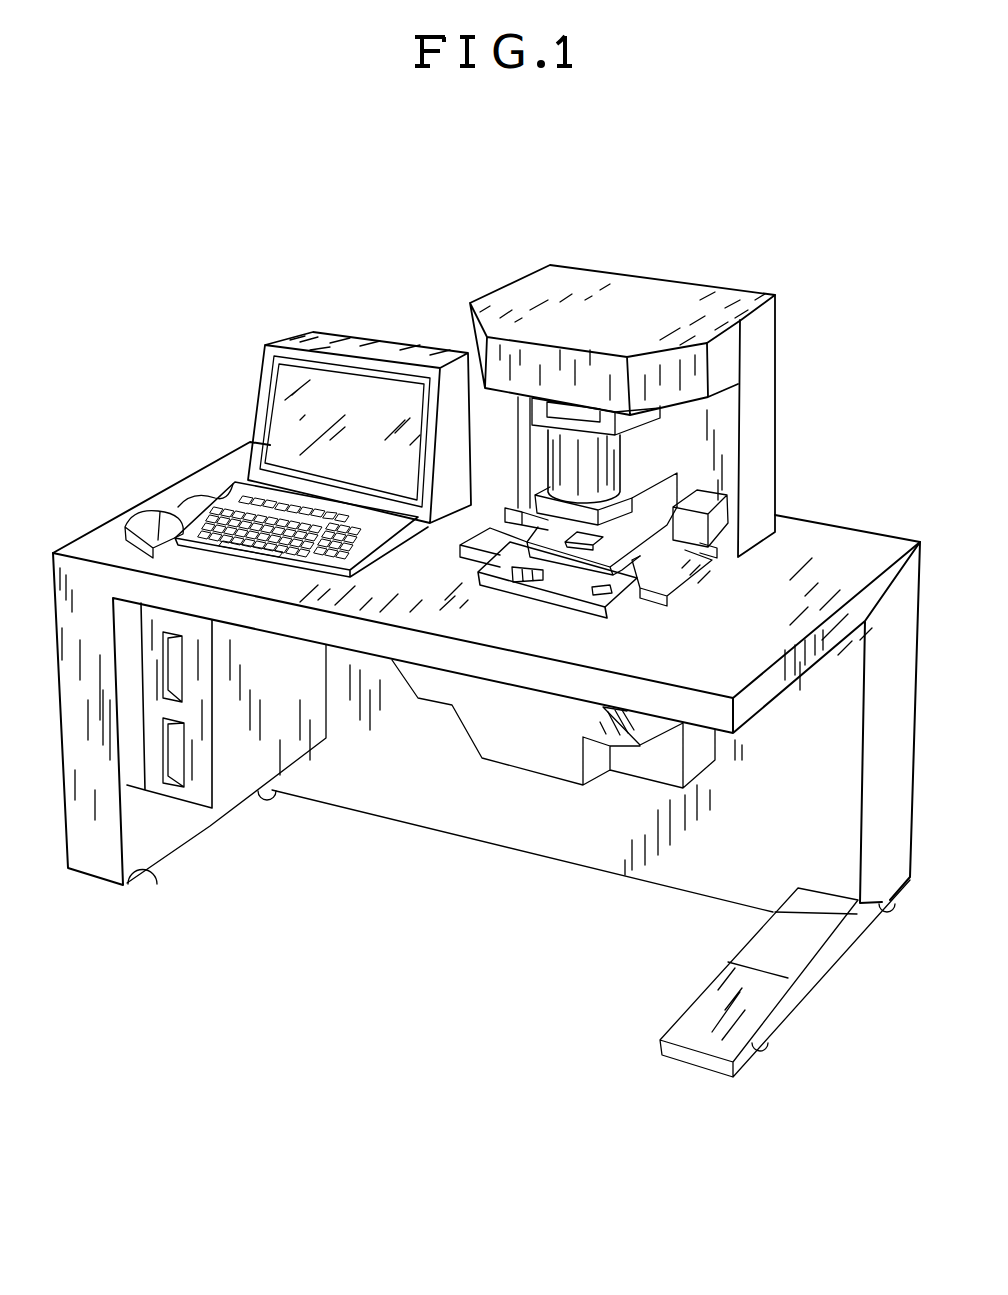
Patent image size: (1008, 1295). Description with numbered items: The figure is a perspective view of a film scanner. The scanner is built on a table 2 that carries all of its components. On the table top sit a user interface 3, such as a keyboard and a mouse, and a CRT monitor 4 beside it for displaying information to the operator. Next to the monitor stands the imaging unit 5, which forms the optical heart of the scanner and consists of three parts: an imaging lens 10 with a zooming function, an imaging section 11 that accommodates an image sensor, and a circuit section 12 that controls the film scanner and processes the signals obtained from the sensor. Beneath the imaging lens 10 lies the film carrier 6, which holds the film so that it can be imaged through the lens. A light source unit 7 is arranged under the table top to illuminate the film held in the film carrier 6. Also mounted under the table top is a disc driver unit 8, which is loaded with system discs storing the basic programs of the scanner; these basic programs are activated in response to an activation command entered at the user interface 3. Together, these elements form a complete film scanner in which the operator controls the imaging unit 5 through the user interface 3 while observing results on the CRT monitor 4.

The table 2 is at (845, 537).
The user interface 3 is at (204, 462).
The CRT monitor 4 is at (362, 348).
The imaging unit 5 is at (678, 409).
The film carrier 6 is at (622, 600).
The light source unit 7 is at (482, 727).
The disc driver unit 8 is at (243, 773).
The imaging lens 10 is at (603, 468).
The imaging section 11 is at (673, 327).
The circuit section 12 is at (778, 343).